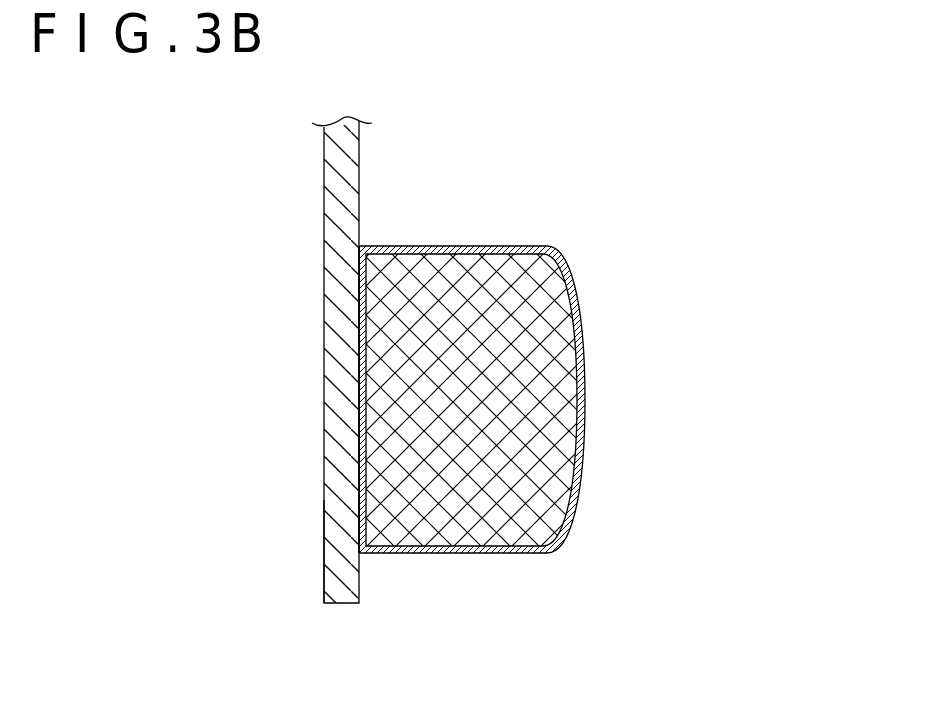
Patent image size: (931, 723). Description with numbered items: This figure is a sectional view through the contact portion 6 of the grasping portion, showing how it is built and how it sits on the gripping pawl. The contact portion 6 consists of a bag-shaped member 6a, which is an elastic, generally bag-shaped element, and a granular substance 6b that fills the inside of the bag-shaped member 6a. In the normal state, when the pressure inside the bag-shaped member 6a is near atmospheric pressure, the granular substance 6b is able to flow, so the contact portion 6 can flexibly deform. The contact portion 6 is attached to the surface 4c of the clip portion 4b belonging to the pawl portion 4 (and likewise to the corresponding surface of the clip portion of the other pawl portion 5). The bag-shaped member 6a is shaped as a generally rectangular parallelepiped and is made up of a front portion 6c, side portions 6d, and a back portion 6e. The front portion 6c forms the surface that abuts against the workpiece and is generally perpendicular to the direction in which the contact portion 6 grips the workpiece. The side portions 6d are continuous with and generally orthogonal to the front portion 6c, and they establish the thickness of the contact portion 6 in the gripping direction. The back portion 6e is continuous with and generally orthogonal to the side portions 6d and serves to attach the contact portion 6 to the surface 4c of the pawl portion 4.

The pawl portion 4 is at (293, 360).
The pawl portion 5 is at (312, 192).
The surface 4c is at (293, 399).
The clip portion 4b is at (251, 551).
The contact portion 6 is at (494, 401).
The bag-shaped member 6a is at (578, 303).
The granular substance 6b is at (538, 358).
The front portion 6c is at (583, 398).
The side portions 6d is at (490, 246).
The back portion 6e is at (360, 405).